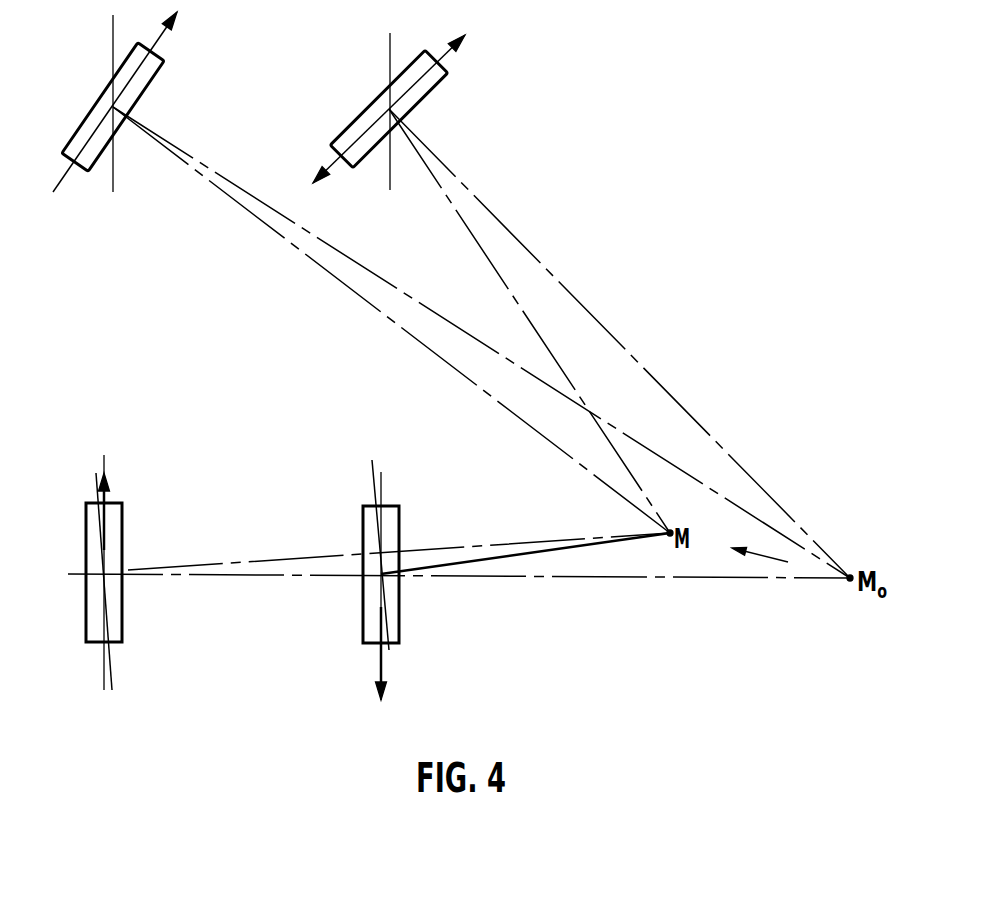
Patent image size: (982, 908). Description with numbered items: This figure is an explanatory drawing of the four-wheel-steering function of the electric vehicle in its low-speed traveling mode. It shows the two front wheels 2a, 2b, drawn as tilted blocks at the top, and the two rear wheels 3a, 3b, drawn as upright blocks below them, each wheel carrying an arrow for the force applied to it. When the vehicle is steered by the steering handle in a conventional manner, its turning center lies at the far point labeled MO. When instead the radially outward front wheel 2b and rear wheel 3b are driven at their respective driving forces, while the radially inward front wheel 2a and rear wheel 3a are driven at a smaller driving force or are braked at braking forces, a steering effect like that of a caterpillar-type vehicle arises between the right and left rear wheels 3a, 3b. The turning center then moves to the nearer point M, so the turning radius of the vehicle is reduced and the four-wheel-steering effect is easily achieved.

The front wheel 2a is at (430, 85).
The front wheel 2b is at (150, 73).
The rear wheel 3a is at (392, 535).
The rear wheel 3b is at (122, 525).